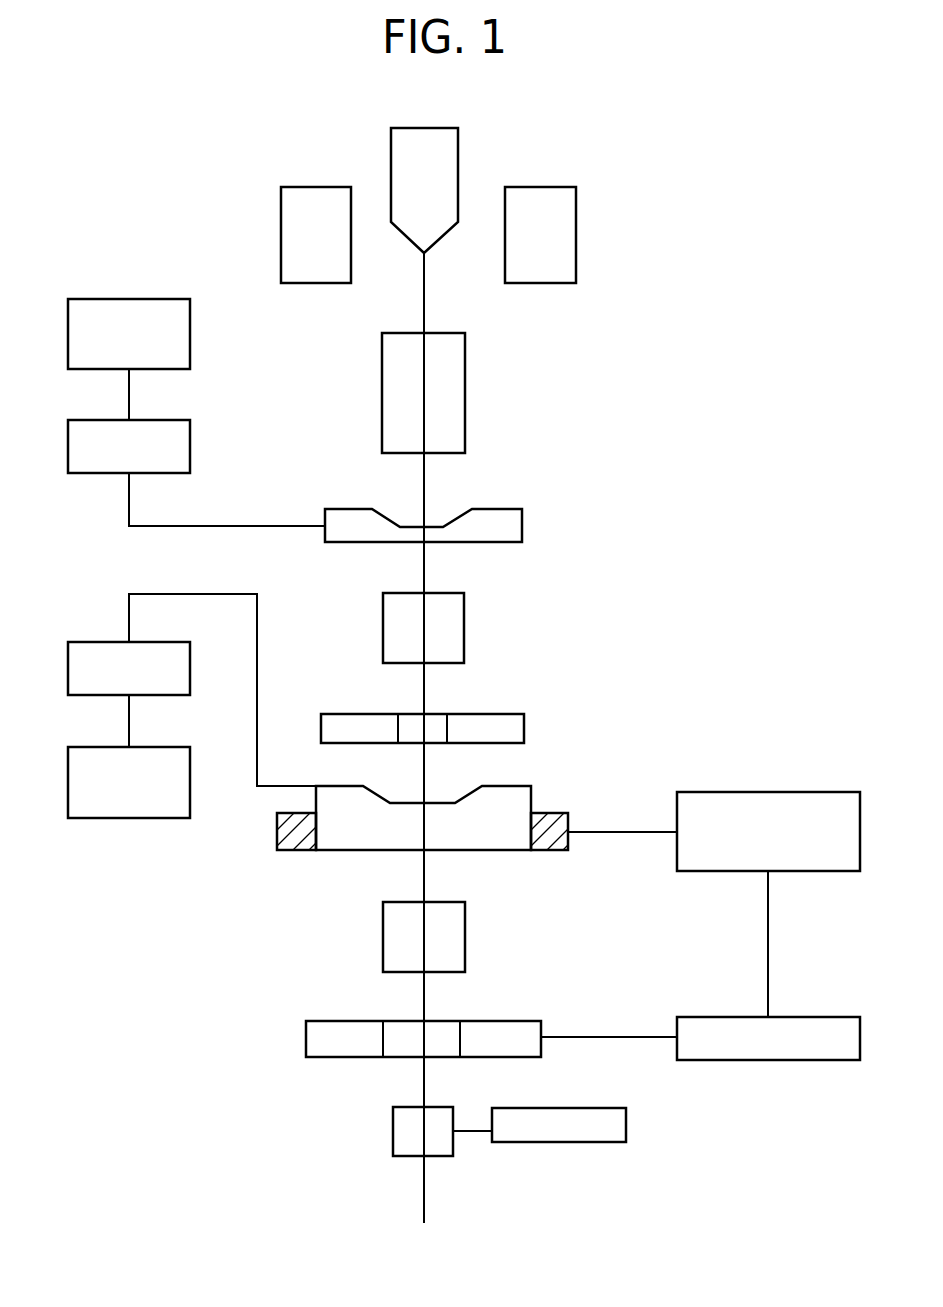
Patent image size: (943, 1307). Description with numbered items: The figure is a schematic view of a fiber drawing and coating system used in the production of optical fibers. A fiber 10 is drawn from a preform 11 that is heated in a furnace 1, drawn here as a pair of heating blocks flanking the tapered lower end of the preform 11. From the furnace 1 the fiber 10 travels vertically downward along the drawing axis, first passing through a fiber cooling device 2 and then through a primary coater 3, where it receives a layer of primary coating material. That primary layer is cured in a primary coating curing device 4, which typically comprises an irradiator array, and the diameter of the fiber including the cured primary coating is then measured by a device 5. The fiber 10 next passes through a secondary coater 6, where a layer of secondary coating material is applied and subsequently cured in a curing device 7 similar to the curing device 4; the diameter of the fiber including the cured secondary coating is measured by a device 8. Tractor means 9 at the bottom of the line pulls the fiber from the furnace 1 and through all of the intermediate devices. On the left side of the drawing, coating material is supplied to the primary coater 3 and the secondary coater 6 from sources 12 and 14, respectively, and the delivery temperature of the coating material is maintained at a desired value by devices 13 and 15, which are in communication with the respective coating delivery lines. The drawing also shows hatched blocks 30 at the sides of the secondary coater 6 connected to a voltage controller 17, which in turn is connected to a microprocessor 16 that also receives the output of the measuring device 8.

The furnace 1 is at (281, 232).
The fiber cooling device 2 is at (465, 370).
The primary coater 3 is at (522, 530).
The primary coating curing device 4 is at (464, 640).
The diameter measuring device 5 is at (524, 730).
The secondary coater 6 is at (500, 786).
The secondary coating curing device 7 is at (465, 930).
The diameter measuring device 8 is at (483, 1057).
The tractor means 9 is at (570, 1142).
The fiber 10 is at (424, 280).
The preform 11 is at (458, 168).
The coating material source 12 is at (190, 338).
The coating temperature control device 13 is at (190, 435).
The coating material source 14 is at (190, 775).
The coating temperature control device 15 is at (190, 668).
The microprocessor 16 is at (767, 1060).
The voltage controller 17 is at (763, 792).
The electrodes 30 is at (548, 850).